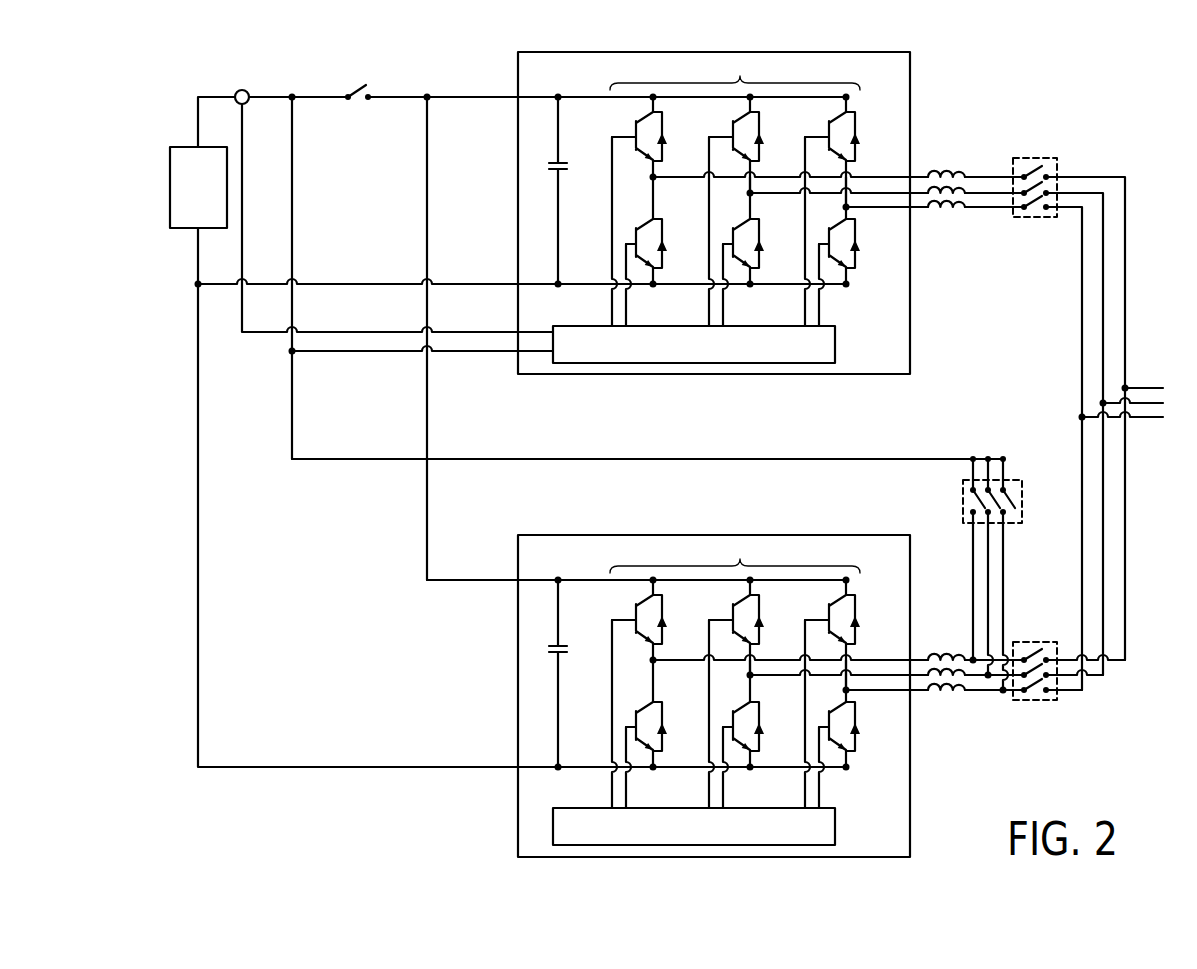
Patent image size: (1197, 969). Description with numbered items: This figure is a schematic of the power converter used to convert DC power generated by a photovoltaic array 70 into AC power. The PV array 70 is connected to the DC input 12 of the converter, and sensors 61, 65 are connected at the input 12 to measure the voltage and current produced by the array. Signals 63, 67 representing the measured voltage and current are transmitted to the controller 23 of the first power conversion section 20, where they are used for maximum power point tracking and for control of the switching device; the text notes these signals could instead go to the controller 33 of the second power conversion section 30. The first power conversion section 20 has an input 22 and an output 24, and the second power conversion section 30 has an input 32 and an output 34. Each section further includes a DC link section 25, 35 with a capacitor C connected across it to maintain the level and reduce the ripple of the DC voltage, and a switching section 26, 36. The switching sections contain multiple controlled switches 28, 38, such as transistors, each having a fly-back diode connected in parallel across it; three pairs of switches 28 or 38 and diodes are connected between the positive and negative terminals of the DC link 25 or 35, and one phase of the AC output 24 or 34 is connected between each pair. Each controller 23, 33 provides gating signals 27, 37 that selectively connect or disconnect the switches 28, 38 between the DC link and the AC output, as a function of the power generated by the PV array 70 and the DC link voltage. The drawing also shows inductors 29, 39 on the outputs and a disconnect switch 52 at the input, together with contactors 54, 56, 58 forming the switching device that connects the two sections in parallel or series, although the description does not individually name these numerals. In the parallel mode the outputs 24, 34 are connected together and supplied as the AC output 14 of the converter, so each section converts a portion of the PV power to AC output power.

The direct current input 12 is at (282, 86).
The alternating current output 14 is at (1148, 377).
The first power conversion section 20 is at (912, 77).
The input 22 is at (511, 91).
The controller 23 is at (838, 343).
The output 24 is at (917, 173).
The DC link section 25 is at (566, 86).
The switching section 26 is at (741, 76).
The gating signals 27 is at (829, 307).
The controlled switches 28 is at (635, 131).
The output inductors 29 is at (961, 165).
The second power conversion section 30 is at (912, 562).
The input 32 is at (511, 573).
The controller 33 is at (838, 825).
The output 34 is at (919, 654).
The DC link section 35 is at (566, 570).
The switching section 36 is at (741, 559).
The gating signals 37 is at (829, 789).
The controlled switches 38 is at (635, 614).
The output inductors 39 is at (960, 702).
The disconnect switch 52 is at (357, 88).
The contactor 54 is at (1022, 502).
The contactor 56 is at (1040, 158).
The contactor 58 is at (1040, 642).
The sensor 61 is at (299, 361).
The signal 63 is at (446, 353).
The sensor 65 is at (236, 91).
The signal 67 is at (446, 332).
The photovoltaic array 70 is at (170, 186).